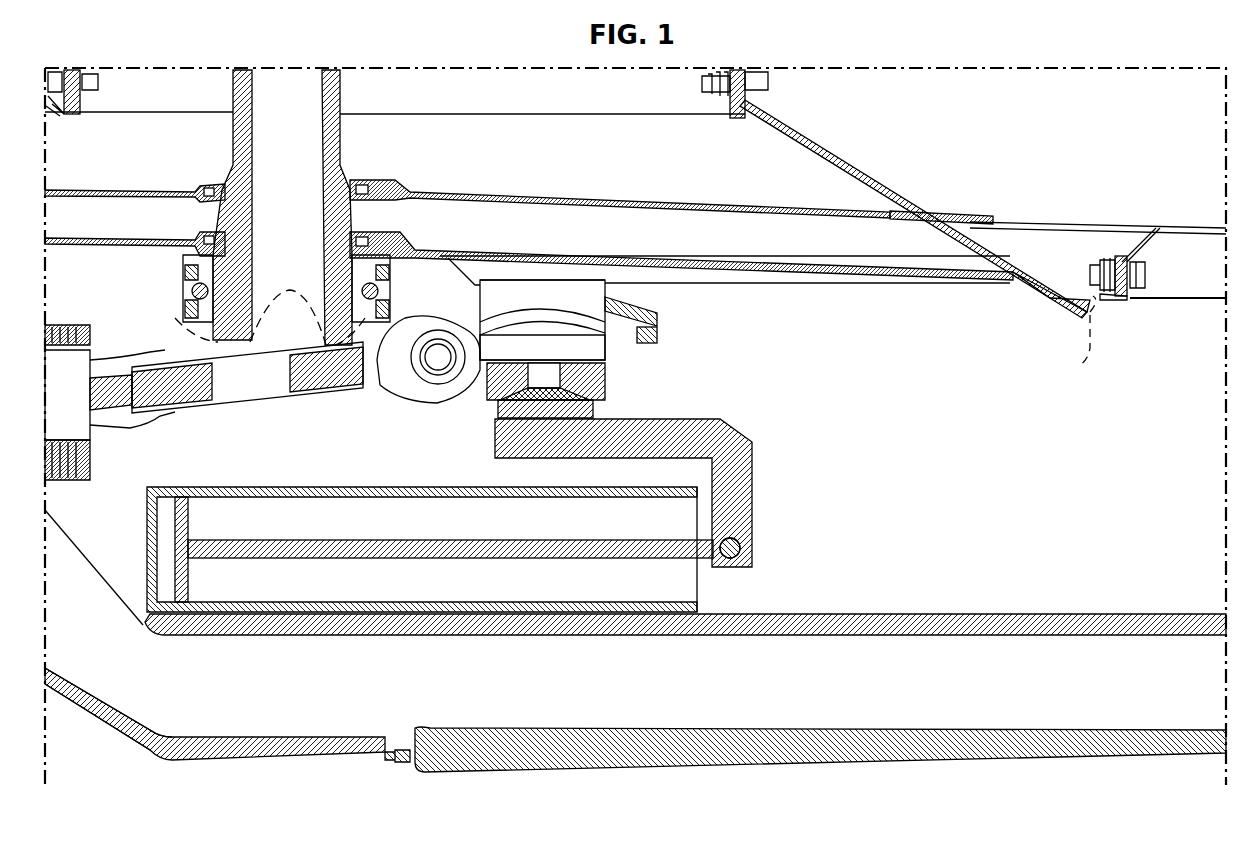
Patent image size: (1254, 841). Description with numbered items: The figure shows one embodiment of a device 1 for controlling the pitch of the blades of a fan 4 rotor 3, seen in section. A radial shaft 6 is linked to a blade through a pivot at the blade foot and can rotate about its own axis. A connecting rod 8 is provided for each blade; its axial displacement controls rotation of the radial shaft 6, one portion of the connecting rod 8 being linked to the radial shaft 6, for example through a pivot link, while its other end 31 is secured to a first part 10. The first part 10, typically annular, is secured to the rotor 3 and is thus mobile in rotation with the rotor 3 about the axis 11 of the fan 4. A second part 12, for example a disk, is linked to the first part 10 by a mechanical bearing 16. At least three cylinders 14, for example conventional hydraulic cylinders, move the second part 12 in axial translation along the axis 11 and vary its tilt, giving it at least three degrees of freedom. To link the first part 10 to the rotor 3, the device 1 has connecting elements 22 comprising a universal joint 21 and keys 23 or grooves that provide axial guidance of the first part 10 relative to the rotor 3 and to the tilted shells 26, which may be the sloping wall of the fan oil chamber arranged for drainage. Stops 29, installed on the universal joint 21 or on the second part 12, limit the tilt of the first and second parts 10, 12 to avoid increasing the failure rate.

The device 1 is at (900, 300).
The rotor 3 is at (745, 248).
The fan 4 is at (312, 784).
The radial shaft 6 is at (338, 84).
The connecting rod 8 is at (263, 410).
The first part 10 is at (608, 348).
The axis 11 is at (893, 754).
The second part 12 is at (752, 488).
The cylinders 14 is at (698, 586).
The mechanical bearing 16 is at (608, 378).
The universal joint 21 is at (615, 323).
The connecting elements 22 is at (644, 317).
The keys 23 is at (610, 280).
The tilted shells 26 is at (818, 286).
The stops 29 is at (650, 318).
The other end 31 is at (441, 398).